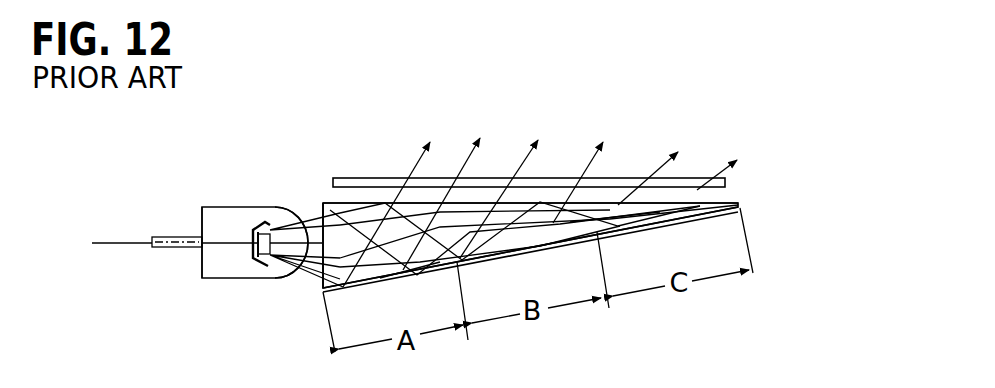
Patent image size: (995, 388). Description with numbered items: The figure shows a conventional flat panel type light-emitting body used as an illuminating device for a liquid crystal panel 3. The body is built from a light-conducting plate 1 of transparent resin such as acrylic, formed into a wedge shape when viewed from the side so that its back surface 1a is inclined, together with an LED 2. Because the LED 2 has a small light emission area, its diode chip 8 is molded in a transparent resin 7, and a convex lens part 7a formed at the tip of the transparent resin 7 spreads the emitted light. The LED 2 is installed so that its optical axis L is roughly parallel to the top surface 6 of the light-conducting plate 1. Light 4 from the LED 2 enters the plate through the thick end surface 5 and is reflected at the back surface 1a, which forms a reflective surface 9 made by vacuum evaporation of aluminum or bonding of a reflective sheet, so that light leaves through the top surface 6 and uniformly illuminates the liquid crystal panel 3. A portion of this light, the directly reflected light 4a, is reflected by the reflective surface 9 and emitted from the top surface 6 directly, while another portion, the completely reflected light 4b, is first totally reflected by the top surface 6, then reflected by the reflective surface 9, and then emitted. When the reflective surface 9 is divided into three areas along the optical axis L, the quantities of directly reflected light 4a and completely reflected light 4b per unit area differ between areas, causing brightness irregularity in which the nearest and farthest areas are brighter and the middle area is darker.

The light-conducting plate 1 is at (732, 192).
The back surface 1a is at (625, 228).
The LED 2 is at (228, 203).
The liquid crystal panel 3 is at (448, 178).
The light 4 is at (287, 275).
The directly reflected light 4a is at (415, 263).
The completely reflected light 4b is at (612, 203).
The thick end surface 5 is at (317, 205).
The top surface 6 is at (362, 203).
The transparent resin 7 is at (213, 272).
The convex lens part 7a is at (290, 220).
The diode chip 8 is at (258, 272).
The reflective surface 9 is at (742, 213).
The optical axis L is at (115, 243).